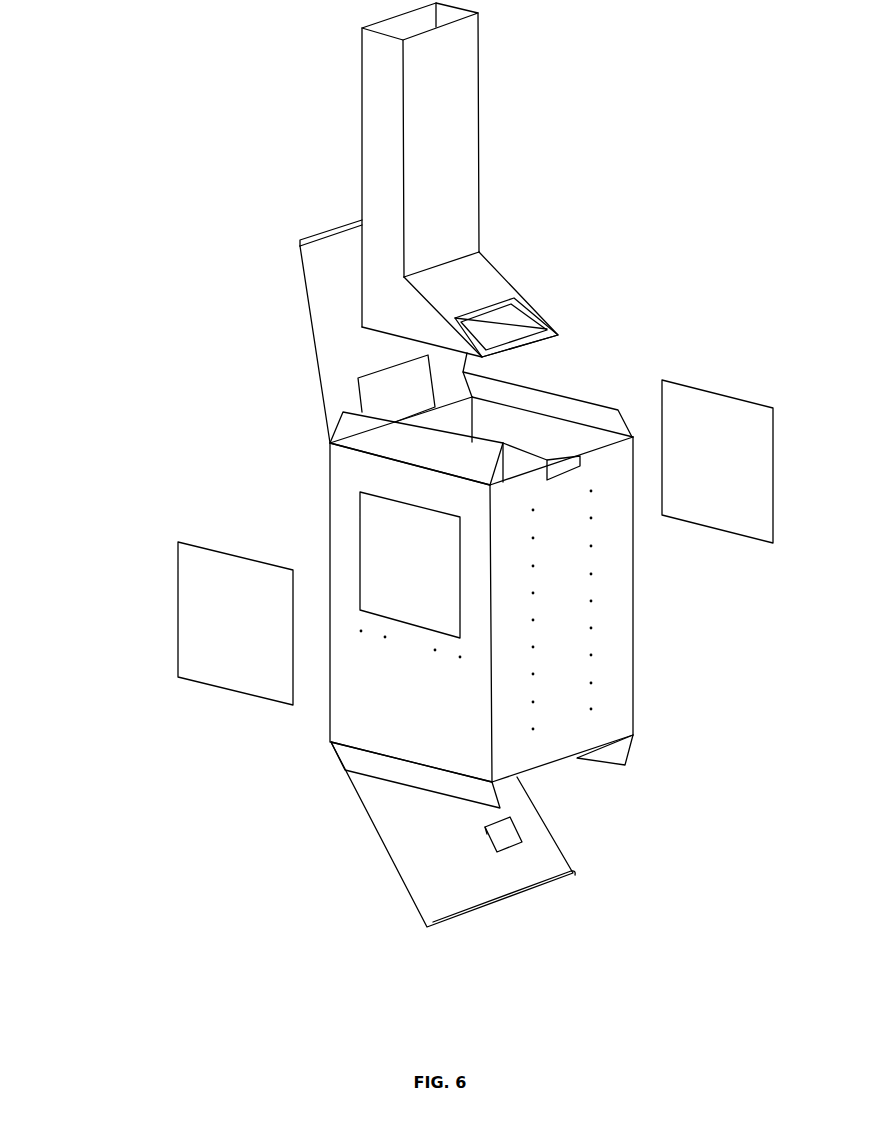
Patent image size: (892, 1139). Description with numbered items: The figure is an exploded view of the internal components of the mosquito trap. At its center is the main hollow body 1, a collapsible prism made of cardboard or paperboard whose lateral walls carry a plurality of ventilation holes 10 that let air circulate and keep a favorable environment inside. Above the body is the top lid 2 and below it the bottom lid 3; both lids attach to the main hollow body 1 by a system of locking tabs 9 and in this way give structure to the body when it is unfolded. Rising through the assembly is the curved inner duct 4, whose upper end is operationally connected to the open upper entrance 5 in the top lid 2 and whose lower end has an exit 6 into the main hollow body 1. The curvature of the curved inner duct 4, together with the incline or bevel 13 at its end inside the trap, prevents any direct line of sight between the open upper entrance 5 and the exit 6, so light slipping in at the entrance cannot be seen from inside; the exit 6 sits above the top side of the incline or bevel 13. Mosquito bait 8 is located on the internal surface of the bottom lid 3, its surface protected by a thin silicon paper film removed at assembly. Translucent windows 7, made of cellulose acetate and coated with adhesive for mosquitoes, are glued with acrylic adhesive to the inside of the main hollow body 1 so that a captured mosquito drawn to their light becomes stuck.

The main hollow body 1 is at (343, 505).
The top lid 2 is at (328, 313).
The bottom lid 3 is at (417, 845).
The curved inner duct 4 is at (378, 118).
The open upper entrance 5 is at (373, 392).
The exit 6 is at (505, 337).
The translucent window 7 is at (227, 587).
The mosquito bait 8 is at (505, 833).
The locking tabs 9 is at (343, 223).
The ventilation holes 10 is at (412, 642).
The incline or bevel 13 is at (490, 263).